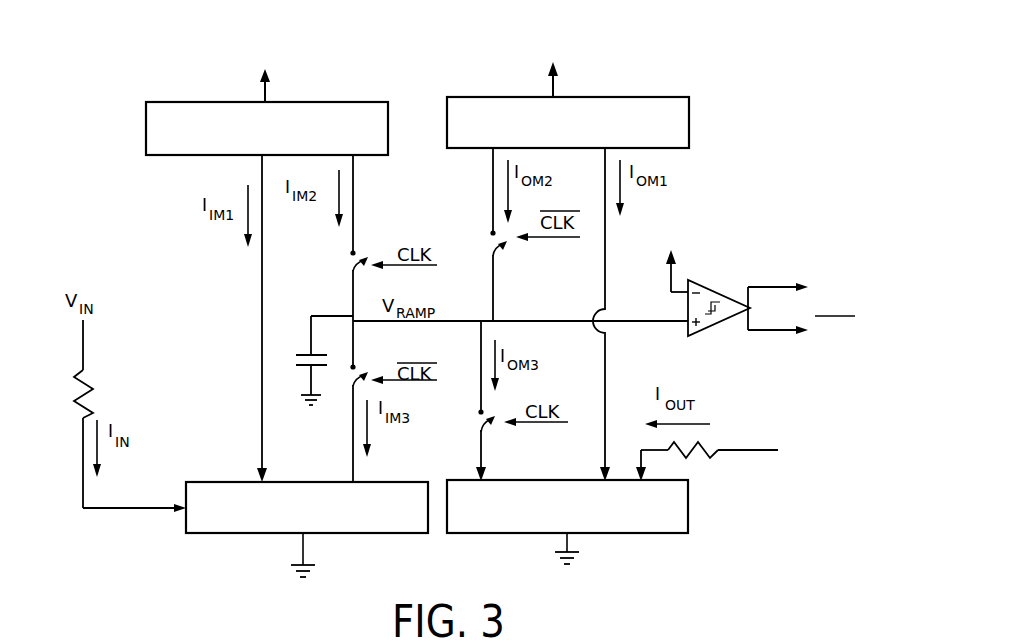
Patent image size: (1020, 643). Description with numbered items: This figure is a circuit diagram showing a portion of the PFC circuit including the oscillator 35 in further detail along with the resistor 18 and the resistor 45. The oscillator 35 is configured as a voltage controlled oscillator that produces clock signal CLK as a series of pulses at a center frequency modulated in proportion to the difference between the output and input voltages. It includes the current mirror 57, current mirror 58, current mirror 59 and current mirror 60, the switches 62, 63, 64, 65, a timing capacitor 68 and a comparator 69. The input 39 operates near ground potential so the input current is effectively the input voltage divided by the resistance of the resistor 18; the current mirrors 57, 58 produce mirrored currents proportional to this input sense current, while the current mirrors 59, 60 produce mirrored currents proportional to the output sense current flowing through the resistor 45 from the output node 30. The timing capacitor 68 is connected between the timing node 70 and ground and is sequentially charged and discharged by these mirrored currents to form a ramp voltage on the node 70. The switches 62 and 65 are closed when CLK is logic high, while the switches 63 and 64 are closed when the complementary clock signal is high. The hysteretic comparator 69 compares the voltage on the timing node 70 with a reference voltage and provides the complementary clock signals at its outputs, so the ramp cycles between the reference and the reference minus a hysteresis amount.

The oscillator 35 is at (720, 86).
The current mirror 58 is at (176, 100).
The current mirror 59 is at (447, 108).
The current mirror 57 is at (205, 537).
The current mirror 60 is at (688, 513).
The switch 62 is at (347, 262).
The switch 63 is at (345, 388).
The switch 64 is at (486, 243).
The switch 65 is at (478, 418).
The timing capacitor 68 is at (305, 372).
The comparator 69 is at (708, 283).
The timing node 70 is at (653, 323).
The resistor 18 is at (73, 400).
The input 39 is at (80, 440).
The resistor 45 is at (700, 460).
The output node 30 is at (743, 450).